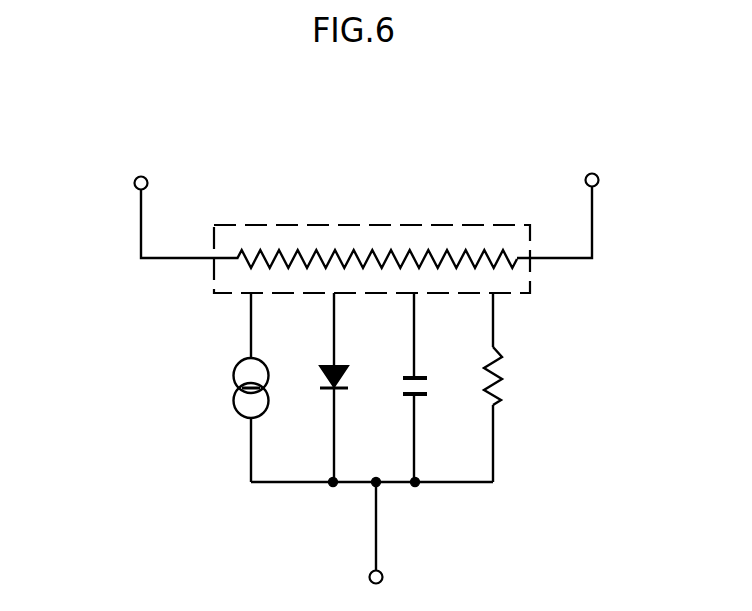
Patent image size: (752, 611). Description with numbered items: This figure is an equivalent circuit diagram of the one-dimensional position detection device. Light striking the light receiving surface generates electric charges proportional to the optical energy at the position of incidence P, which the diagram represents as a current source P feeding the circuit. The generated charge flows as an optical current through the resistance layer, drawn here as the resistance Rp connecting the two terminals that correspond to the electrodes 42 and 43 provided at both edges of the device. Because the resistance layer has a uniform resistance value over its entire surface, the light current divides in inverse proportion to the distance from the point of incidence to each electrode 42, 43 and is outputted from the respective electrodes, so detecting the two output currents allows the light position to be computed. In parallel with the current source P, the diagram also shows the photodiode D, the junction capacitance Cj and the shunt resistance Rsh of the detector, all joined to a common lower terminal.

The electrode 42 is at (592, 218).
The electrode 43 is at (141, 218).
The parallel resistance Rp is at (372, 237).
The position of incidence P is at (233, 387).
The photodiode D is at (347, 387).
The junction capacitance Cj is at (436, 387).
The shunt resistance Rsh is at (526, 387).